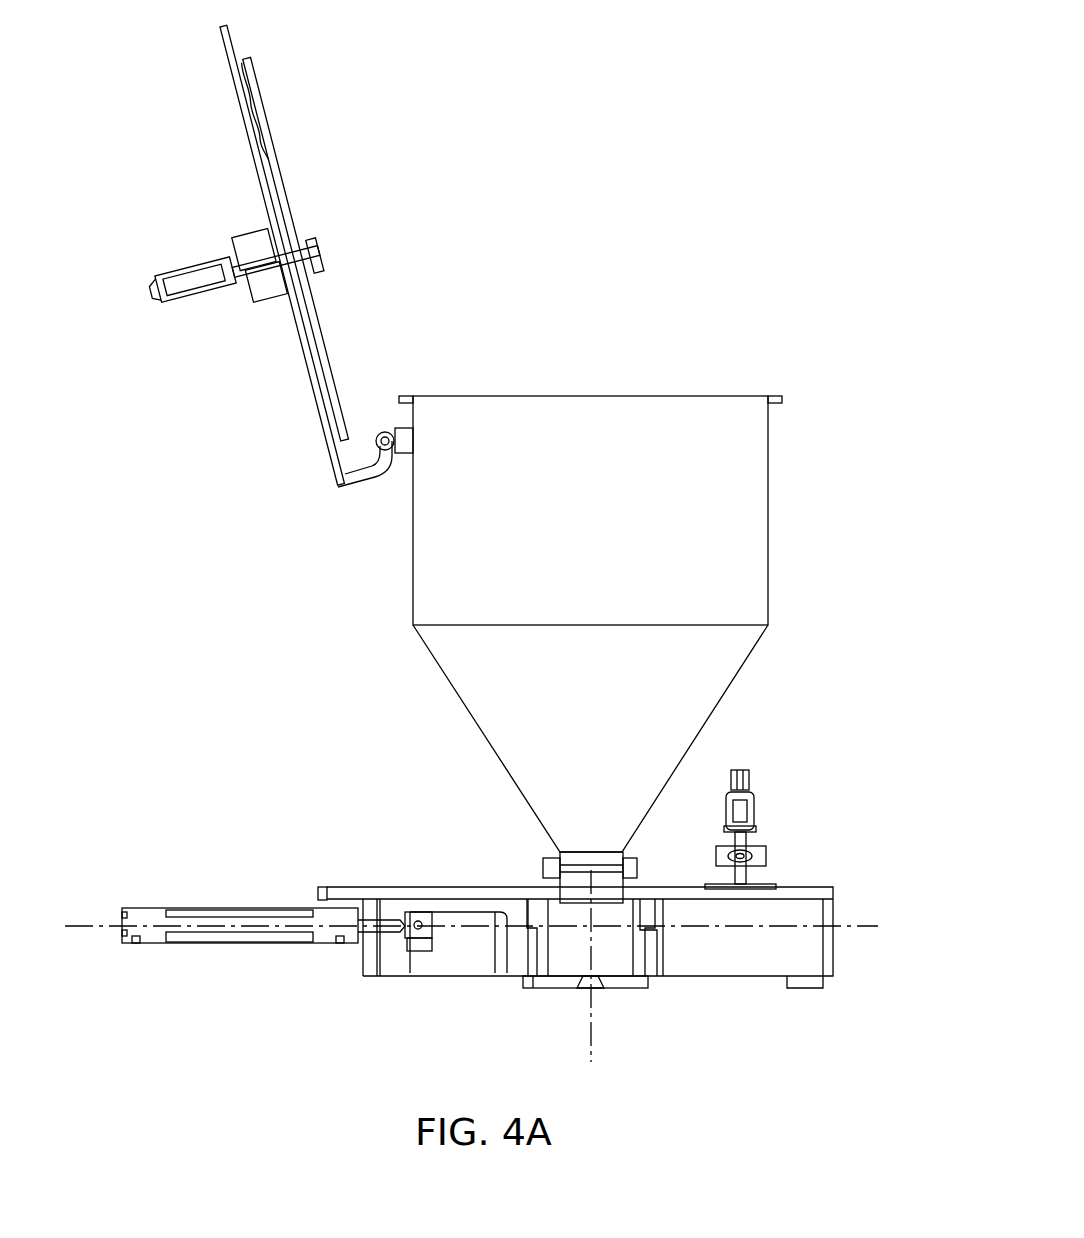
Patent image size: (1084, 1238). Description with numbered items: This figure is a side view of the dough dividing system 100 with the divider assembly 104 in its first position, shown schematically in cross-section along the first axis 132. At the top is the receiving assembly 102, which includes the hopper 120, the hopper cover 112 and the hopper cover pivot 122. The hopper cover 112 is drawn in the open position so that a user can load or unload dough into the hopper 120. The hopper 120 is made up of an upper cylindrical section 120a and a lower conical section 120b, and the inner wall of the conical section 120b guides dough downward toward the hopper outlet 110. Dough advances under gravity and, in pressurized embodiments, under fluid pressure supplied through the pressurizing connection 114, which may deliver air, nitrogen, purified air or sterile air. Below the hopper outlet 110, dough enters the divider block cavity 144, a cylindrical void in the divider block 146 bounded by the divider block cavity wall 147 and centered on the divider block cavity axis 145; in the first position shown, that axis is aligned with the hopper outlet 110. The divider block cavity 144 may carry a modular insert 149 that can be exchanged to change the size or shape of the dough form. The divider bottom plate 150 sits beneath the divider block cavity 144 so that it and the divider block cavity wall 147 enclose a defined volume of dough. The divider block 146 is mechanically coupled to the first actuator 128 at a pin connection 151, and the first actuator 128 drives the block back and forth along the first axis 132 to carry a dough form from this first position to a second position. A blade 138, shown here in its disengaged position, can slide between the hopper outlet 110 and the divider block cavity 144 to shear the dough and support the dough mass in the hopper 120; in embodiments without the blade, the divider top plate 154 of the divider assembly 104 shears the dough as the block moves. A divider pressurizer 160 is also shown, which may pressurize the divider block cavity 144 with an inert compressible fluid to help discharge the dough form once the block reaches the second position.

The dough dividing system 100 is at (806, 198).
The receiving assembly 102 is at (870, 484).
The divider assembly 104 is at (850, 913).
The hopper outlet 110 is at (597, 846).
The hopper cover 112 is at (243, 161).
The pressurizing connection 114 is at (174, 290).
The hopper 120 is at (527, 624).
The cylindrical section 120a is at (752, 512).
The conical section 120b is at (706, 693).
The hopper cover pivot 122 is at (385, 432).
The first actuator 128 is at (152, 938).
The first axis 132 is at (75, 925).
The blade 138 is at (570, 910).
The divider block cavity 144 is at (611, 965).
The divider block cavity axis 145 is at (594, 1052).
The divider block 146 is at (507, 935).
The divider block cavity wall 147 is at (624, 908).
The modular insert 149 is at (562, 895).
The divider bottom plate 150 is at (548, 990).
The pin connection 151 is at (416, 932).
The divider top plate 154 is at (792, 886).
The divider pressurizer 160 is at (804, 808).